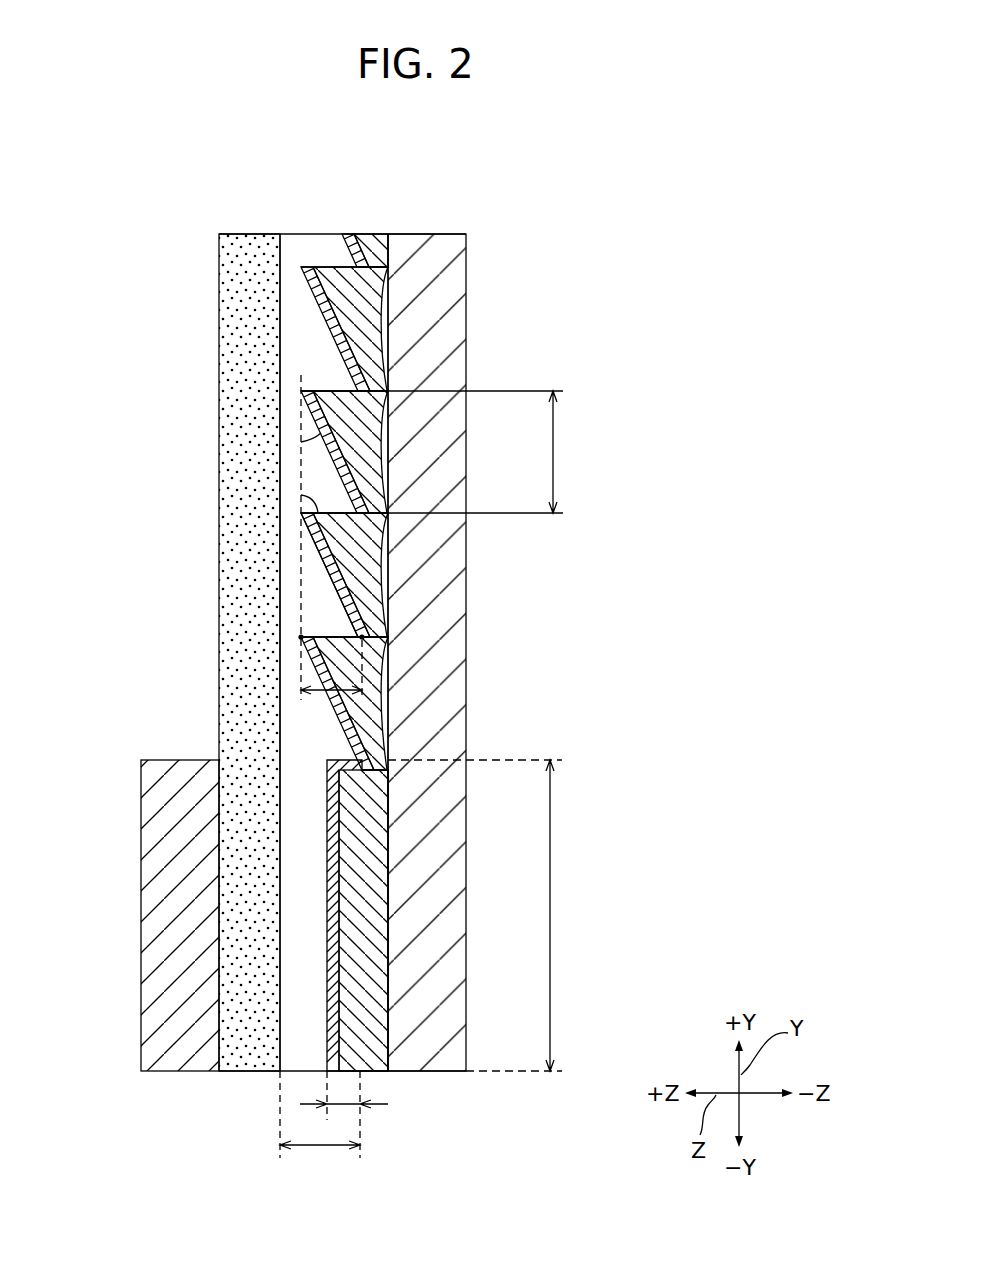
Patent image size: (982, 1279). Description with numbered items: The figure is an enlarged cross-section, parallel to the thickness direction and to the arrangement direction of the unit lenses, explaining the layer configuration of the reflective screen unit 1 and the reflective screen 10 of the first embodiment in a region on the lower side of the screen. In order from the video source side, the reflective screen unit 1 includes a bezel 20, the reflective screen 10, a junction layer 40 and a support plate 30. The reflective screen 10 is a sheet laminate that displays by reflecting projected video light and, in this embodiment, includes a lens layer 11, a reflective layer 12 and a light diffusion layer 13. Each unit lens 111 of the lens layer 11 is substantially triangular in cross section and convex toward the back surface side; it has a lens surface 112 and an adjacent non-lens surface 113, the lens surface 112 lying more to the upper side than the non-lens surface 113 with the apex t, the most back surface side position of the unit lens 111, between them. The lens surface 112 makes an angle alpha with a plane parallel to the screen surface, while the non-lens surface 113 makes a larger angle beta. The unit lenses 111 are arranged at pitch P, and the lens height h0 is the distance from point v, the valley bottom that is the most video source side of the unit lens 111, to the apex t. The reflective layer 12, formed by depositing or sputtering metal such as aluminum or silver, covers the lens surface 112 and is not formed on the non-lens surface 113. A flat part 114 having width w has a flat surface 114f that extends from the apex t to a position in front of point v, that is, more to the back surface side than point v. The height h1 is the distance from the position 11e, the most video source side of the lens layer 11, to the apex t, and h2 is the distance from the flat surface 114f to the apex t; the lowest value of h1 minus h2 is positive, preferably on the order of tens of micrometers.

The reflective screen unit 1 is at (514, 205).
The reflective screen 10 is at (362, 152).
The lens layer 11 is at (303, 236).
The position that is the most video source side of the lens layer 11e is at (292, 1015).
The reflective layer 12 is at (357, 232).
The light diffusion layer 13 is at (253, 236).
The bezel 20 is at (141, 904).
The support plate 30 is at (445, 243).
The junction layer 40 is at (381, 240).
The unit lens 111 is at (316, 599).
The lens surface 112 is at (330, 560).
The non-lens surface 113 is at (338, 634).
The flat part 114 is at (320, 1036).
The flat surface 114f is at (340, 877).
The arrangement pitch P is at (438, 452).
The width w is at (483, 915).
The lens height h0 is at (340, 690).
The height h1 is at (320, 1114).
The distance from the flat surface until the apex h2 is at (343, 1104).
The apex t is at (364, 638).
The point v is at (300, 639).